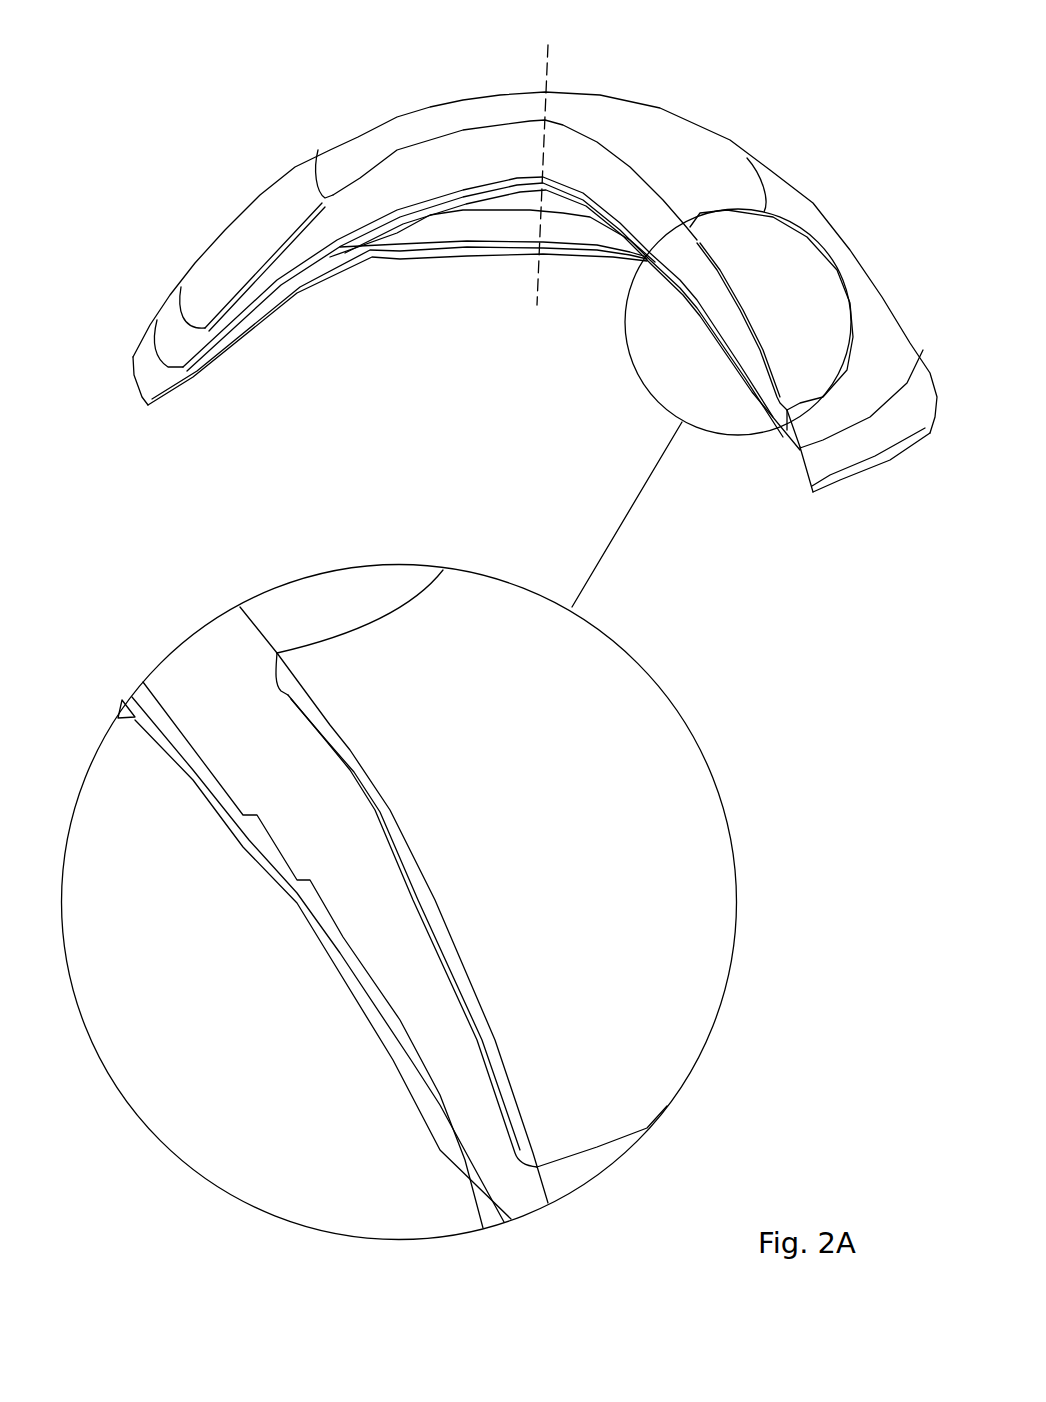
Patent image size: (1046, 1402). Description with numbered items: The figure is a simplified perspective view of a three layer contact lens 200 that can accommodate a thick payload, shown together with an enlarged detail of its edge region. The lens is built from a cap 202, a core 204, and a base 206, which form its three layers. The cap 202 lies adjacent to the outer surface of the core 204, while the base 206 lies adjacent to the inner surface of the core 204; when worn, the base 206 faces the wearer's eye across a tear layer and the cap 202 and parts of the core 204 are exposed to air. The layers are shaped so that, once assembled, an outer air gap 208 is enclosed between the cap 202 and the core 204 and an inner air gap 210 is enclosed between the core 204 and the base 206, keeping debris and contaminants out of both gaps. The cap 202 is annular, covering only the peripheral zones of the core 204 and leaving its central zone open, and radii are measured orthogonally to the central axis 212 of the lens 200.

The three layer contact lens 200 is at (870, 558).
The cap 202 is at (782, 205).
The core 204 is at (597, 173).
The base 206 is at (262, 310).
The outer air gap 208 is at (433, 935).
The inner air gap 210 is at (417, 1057).
The central axis 212 is at (545, 75).